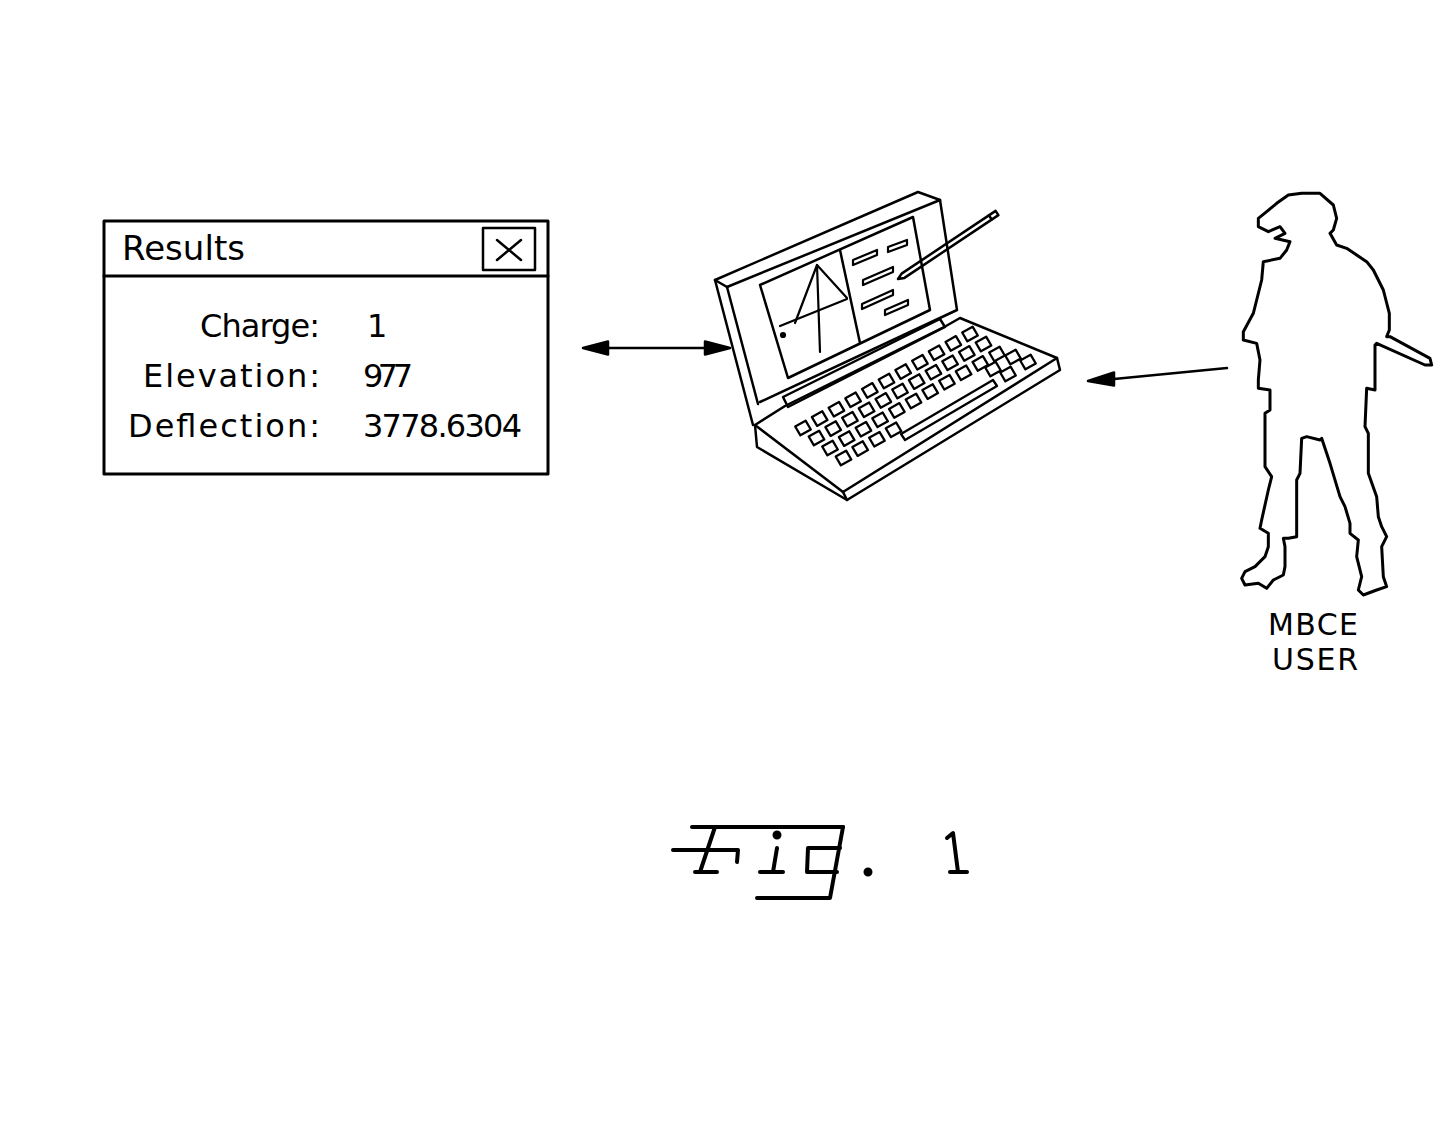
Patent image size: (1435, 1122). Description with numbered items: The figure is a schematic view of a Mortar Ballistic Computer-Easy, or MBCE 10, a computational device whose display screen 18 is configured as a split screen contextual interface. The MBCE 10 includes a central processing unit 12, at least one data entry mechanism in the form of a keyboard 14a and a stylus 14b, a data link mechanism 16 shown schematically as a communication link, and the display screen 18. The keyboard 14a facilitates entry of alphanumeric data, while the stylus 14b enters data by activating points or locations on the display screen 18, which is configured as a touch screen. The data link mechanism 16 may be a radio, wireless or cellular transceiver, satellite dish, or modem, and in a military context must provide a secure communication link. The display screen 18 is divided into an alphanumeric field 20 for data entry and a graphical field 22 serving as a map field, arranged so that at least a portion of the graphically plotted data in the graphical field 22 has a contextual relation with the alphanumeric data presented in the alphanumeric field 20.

The Mortar Ballistic Computer-Easy (MBCE) 10 is at (1008, 166).
The central processing unit 12 is at (777, 466).
The keyboard 14a is at (1011, 343).
The stylus 14b is at (985, 242).
The data link mechanism 16 is at (663, 351).
The display screen 18 is at (815, 216).
The alphanumeric field 20 is at (892, 245).
The graphical field 22 is at (783, 293).